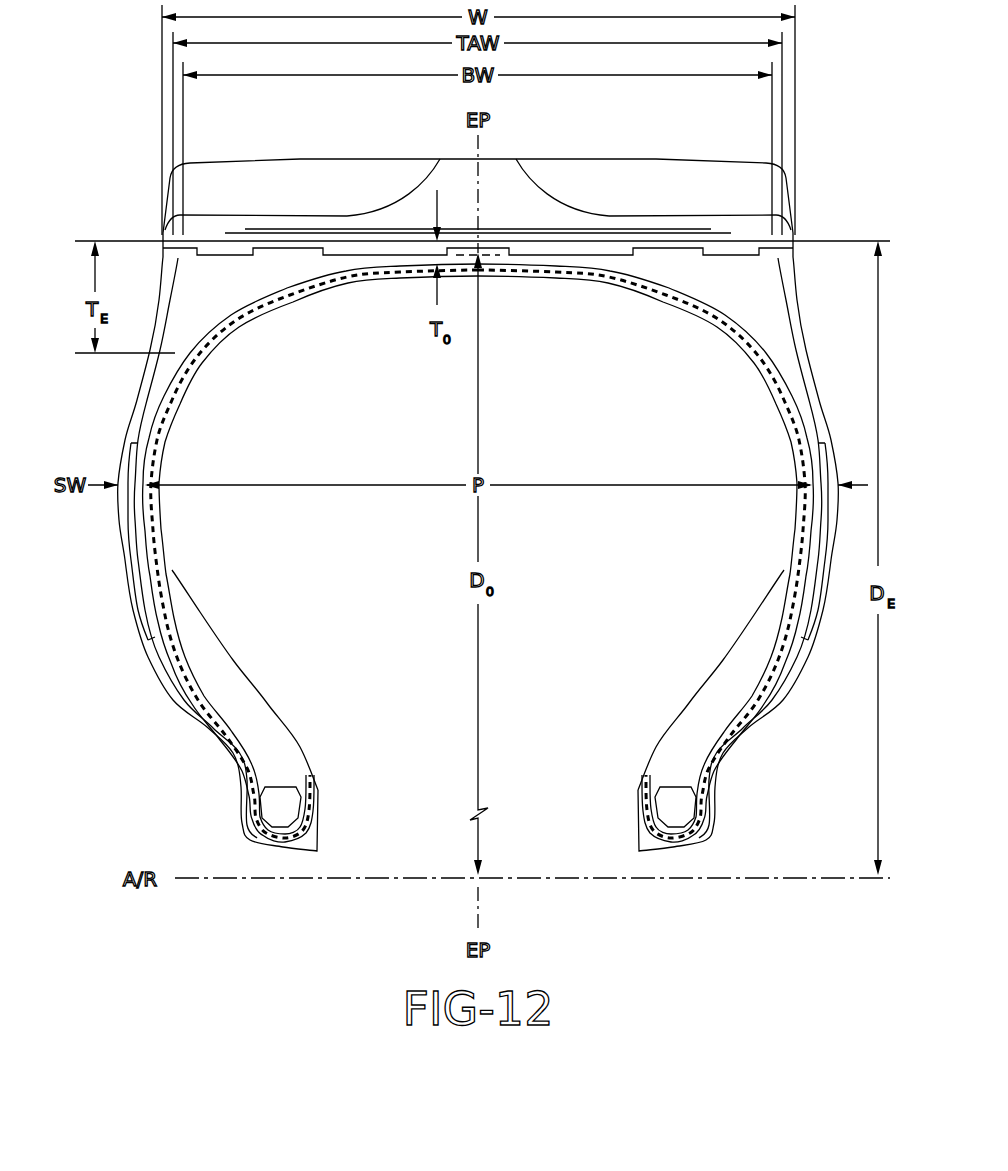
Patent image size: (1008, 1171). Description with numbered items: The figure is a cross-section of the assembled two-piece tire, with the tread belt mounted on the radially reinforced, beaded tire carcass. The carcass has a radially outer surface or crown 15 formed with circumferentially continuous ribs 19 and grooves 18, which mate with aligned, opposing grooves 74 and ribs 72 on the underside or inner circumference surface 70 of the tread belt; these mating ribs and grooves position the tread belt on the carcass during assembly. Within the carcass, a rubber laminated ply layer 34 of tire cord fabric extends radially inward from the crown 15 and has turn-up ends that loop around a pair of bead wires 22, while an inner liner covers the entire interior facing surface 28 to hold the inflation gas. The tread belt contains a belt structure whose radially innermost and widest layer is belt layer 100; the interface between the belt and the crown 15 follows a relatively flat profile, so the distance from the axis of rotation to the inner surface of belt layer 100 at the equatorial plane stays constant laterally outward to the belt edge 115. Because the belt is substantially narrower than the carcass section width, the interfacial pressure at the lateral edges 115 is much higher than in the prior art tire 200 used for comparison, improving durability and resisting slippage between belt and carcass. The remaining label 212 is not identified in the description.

The prior art tire 200 is at (469, 461).
The tread 212 is at (434, 190).
The belt layer 100 is at (733, 213).
The belt edge 115 is at (196, 232).
The crown 15 is at (550, 247).
The ribs 19 is at (487, 246).
The inner circumference surface 70 is at (528, 278).
The ribs 72 is at (290, 256).
The grooves 74 is at (343, 252).
The grooves 18 is at (280, 257).
The interior facing surface 28 is at (756, 401).
The carcass ply 34 is at (793, 590).
The bead wires 22 is at (280, 805).